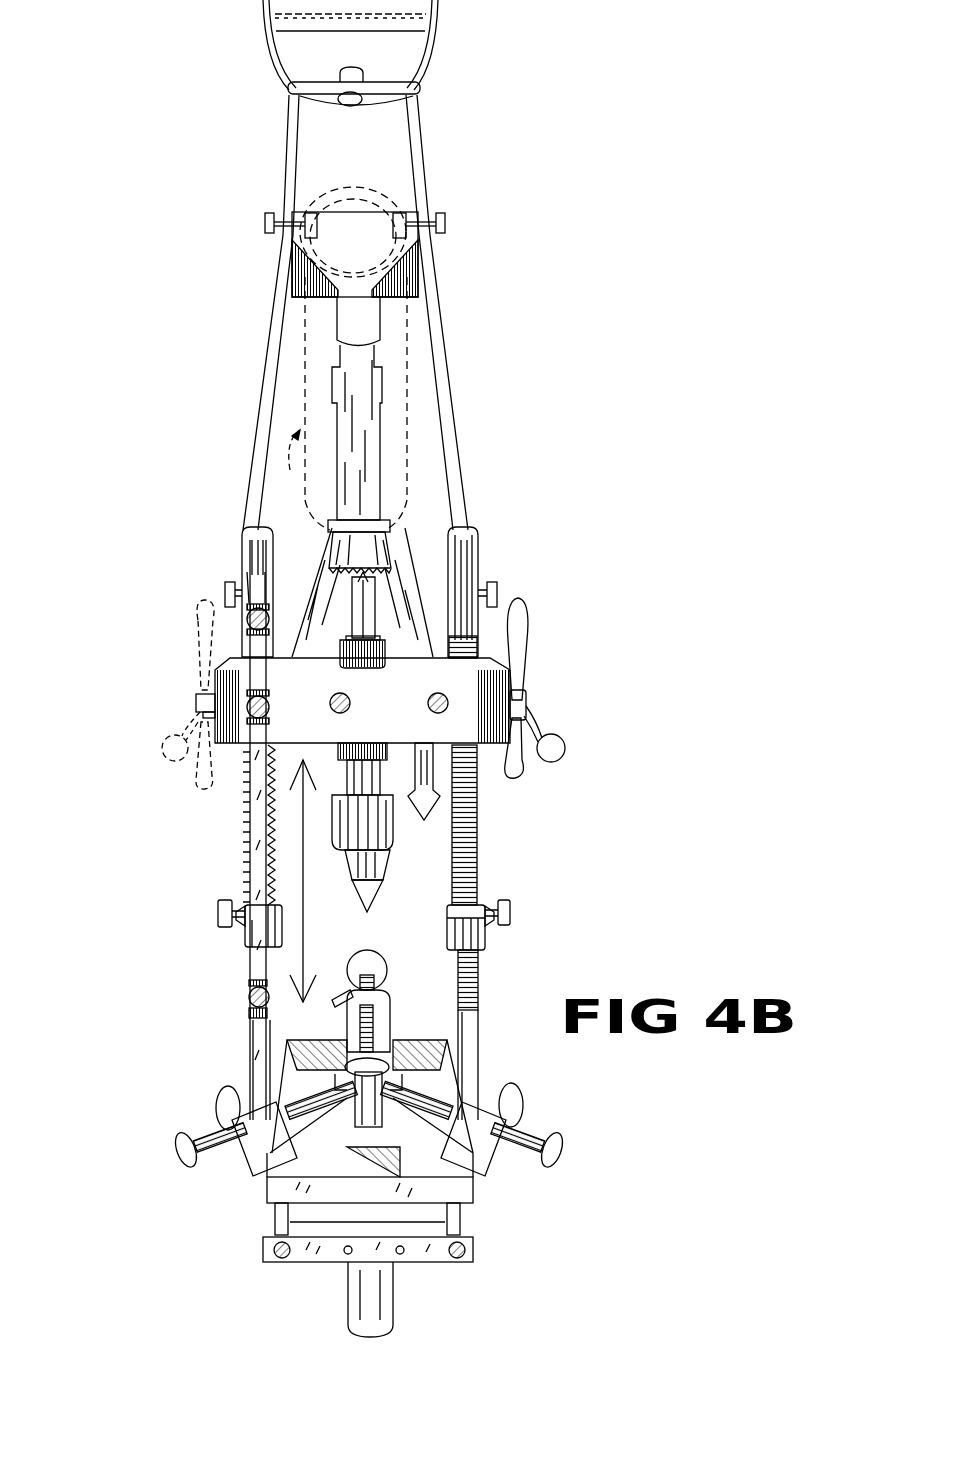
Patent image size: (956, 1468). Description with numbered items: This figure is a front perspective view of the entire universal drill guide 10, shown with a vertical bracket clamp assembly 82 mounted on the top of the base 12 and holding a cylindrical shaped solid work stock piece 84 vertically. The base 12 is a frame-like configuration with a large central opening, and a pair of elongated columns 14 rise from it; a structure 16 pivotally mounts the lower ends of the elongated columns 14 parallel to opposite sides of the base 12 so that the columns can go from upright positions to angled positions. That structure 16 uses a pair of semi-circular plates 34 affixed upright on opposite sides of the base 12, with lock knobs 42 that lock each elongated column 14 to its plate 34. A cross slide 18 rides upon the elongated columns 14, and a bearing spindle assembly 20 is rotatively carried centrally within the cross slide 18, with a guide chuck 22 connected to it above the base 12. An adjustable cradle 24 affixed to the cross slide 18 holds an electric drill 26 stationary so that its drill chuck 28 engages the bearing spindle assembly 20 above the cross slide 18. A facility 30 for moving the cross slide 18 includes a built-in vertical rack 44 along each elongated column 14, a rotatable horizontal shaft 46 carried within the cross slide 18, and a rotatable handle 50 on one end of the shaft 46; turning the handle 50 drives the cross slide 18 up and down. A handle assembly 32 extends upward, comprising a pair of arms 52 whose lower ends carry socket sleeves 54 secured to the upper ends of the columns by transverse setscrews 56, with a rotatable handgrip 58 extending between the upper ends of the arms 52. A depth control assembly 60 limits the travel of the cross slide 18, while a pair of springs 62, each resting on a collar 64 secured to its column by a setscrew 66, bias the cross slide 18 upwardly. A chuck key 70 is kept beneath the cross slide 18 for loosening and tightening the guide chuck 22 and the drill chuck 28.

The universal drill guide 10 is at (152, 658).
The base 12 is at (476, 1240).
The elongated columns 14 is at (252, 1046).
The structure for pivotally mounting 16 is at (462, 1098).
The cross slide 18 is at (298, 640).
The bearing spindle assembly 20 is at (372, 580).
The guide chuck 22 is at (376, 862).
The adjustable cradle 24 is at (368, 440).
The electric drill 26 is at (335, 358).
The drill chuck 28 is at (417, 403).
The facility for moving the cross slide 30 is at (528, 700).
The handle assembly 32 is at (284, 178).
The semi-circular plates 34 is at (264, 1214).
The lock knobs 42 is at (515, 1098).
The vertical rack 44 is at (482, 970).
The rotatable horizontal shaft 46 is at (196, 703).
The rotatable handle 50 is at (566, 740).
The arms 52 is at (268, 351).
The socket sleeves 54 is at (242, 540).
The setscrews 56 is at (224, 584).
The rotatable handgrip 58 is at (280, 60).
The depth control assembly 60 is at (250, 960).
The springs 62 is at (245, 851).
The collars 64 is at (240, 938).
The setscrews 66 is at (218, 912).
The chuck key 70 is at (428, 822).
The vertical bracket clamp assembly 82 is at (470, 1192).
The cylindrical shaped solid work stock piece 84 is at (365, 1296).